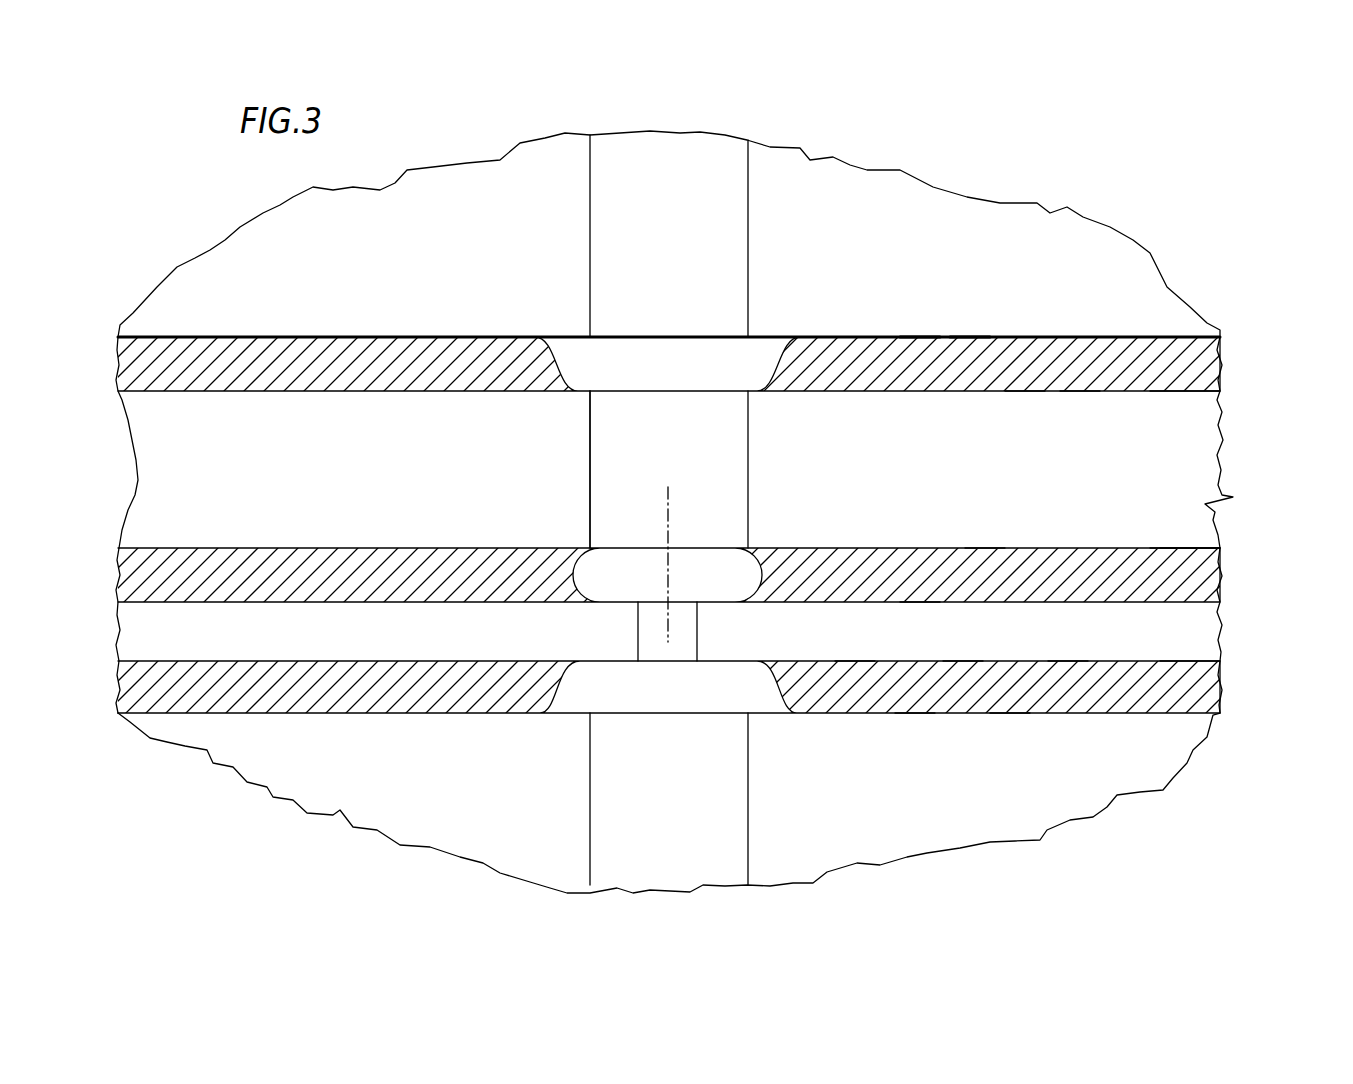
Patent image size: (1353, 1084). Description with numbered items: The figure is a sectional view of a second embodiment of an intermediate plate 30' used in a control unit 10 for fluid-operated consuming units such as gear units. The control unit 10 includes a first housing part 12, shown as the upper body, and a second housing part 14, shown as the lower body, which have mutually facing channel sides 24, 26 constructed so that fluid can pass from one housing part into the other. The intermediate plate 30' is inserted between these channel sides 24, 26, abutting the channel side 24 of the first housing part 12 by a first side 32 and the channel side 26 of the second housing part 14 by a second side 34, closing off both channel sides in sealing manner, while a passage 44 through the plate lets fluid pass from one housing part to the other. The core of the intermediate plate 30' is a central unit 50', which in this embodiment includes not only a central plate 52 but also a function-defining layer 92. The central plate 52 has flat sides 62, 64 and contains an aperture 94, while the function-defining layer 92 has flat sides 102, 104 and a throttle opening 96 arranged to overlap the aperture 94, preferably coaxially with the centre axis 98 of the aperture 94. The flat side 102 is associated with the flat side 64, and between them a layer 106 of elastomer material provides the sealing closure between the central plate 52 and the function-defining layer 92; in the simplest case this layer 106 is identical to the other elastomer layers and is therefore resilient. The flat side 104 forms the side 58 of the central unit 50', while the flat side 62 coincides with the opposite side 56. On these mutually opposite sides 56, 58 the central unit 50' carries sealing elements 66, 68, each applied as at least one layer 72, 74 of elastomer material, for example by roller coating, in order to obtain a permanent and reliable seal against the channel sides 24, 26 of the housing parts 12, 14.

The control unit 10 is at (1045, 177).
The first housing part 12 is at (927, 213).
The second housing part 14 is at (850, 843).
The channel side 24 is at (810, 343).
The channel side 26 is at (820, 710).
The layer of elastomer material 106 is at (848, 570).
The intermediate plate 30' is at (1233, 399).
The central unit 50' is at (1238, 490).
The first side 32 is at (918, 336).
The second side 34 is at (915, 714).
The passage 44 is at (684, 426).
The central plate 52 is at (1183, 522).
The side of central unit 56 is at (1025, 392).
The side of central unit 58 is at (963, 662).
The flat side of central plate 62 is at (1077, 392).
The flat side of central plate 64 is at (983, 563).
The sealing element 66 is at (958, 357).
The sealing element 68 is at (851, 677).
The layer of elastomer material 72 is at (880, 360).
The layer of elastomer material 74 is at (1008, 683).
The function-defining layer 92 is at (1183, 634).
The aperture 94 is at (588, 478).
The throttle opening 96 is at (638, 642).
The centre axis 98 is at (685, 510).
The flat side of function-defining layer 102 is at (920, 582).
The flat side of function-defining layer 104 is at (1068, 662).